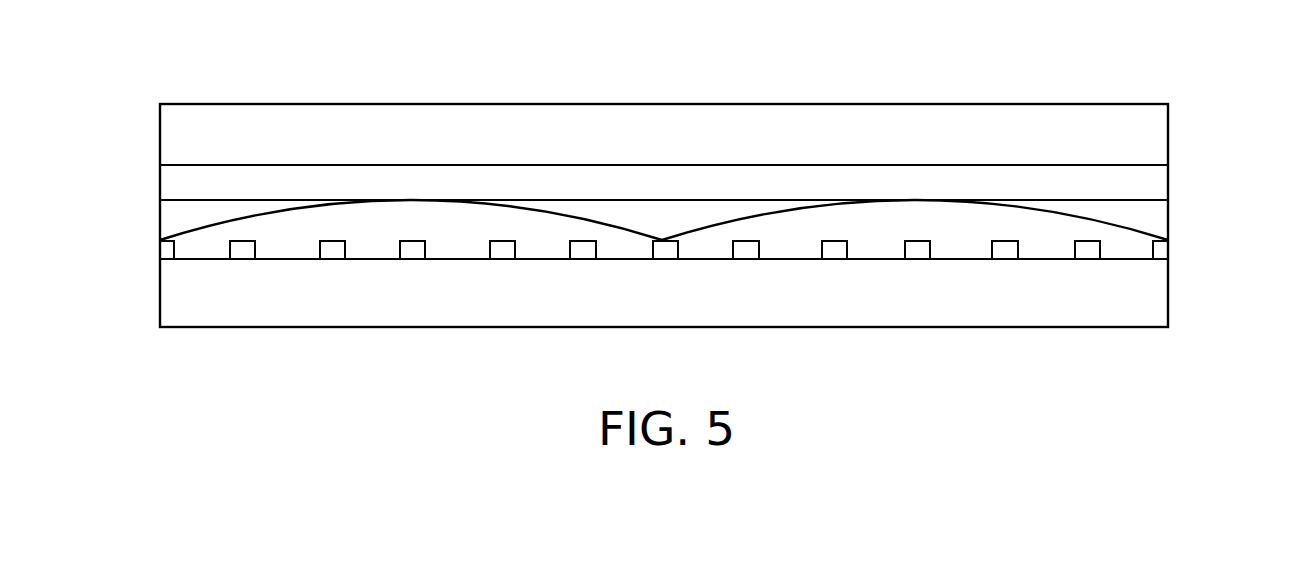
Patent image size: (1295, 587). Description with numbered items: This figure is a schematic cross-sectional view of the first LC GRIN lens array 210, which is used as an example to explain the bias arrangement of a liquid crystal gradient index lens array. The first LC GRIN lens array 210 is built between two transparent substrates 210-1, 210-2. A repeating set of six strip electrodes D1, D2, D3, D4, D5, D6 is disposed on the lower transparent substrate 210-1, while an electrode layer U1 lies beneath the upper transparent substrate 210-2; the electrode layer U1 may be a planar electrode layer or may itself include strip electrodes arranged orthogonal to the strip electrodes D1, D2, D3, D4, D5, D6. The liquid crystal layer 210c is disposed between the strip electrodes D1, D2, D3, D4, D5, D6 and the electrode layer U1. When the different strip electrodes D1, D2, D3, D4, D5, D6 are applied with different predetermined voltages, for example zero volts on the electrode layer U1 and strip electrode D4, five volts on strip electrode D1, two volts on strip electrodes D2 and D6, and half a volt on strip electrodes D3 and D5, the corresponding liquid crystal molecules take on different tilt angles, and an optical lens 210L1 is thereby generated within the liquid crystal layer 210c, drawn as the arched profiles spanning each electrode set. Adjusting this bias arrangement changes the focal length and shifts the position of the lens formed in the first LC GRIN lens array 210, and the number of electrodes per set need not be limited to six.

The first LC GRIN lens array 210 is at (176, 65).
The transparent substrate 210-1 is at (1152, 297).
The transparent substrate 210-2 is at (1152, 138).
The electrode layer U1 is at (1152, 183).
The liquid crystal layer 210c is at (160, 220).
The optical lens 210L1 is at (717, 218).
The strip electrode D1 is at (167, 250).
The strip electrode D2 is at (242, 250).
The strip electrode D3 is at (332, 250).
The strip electrode D4 is at (412, 250).
The strip electrode D5 is at (502, 250).
The strip electrode D6 is at (582, 250).